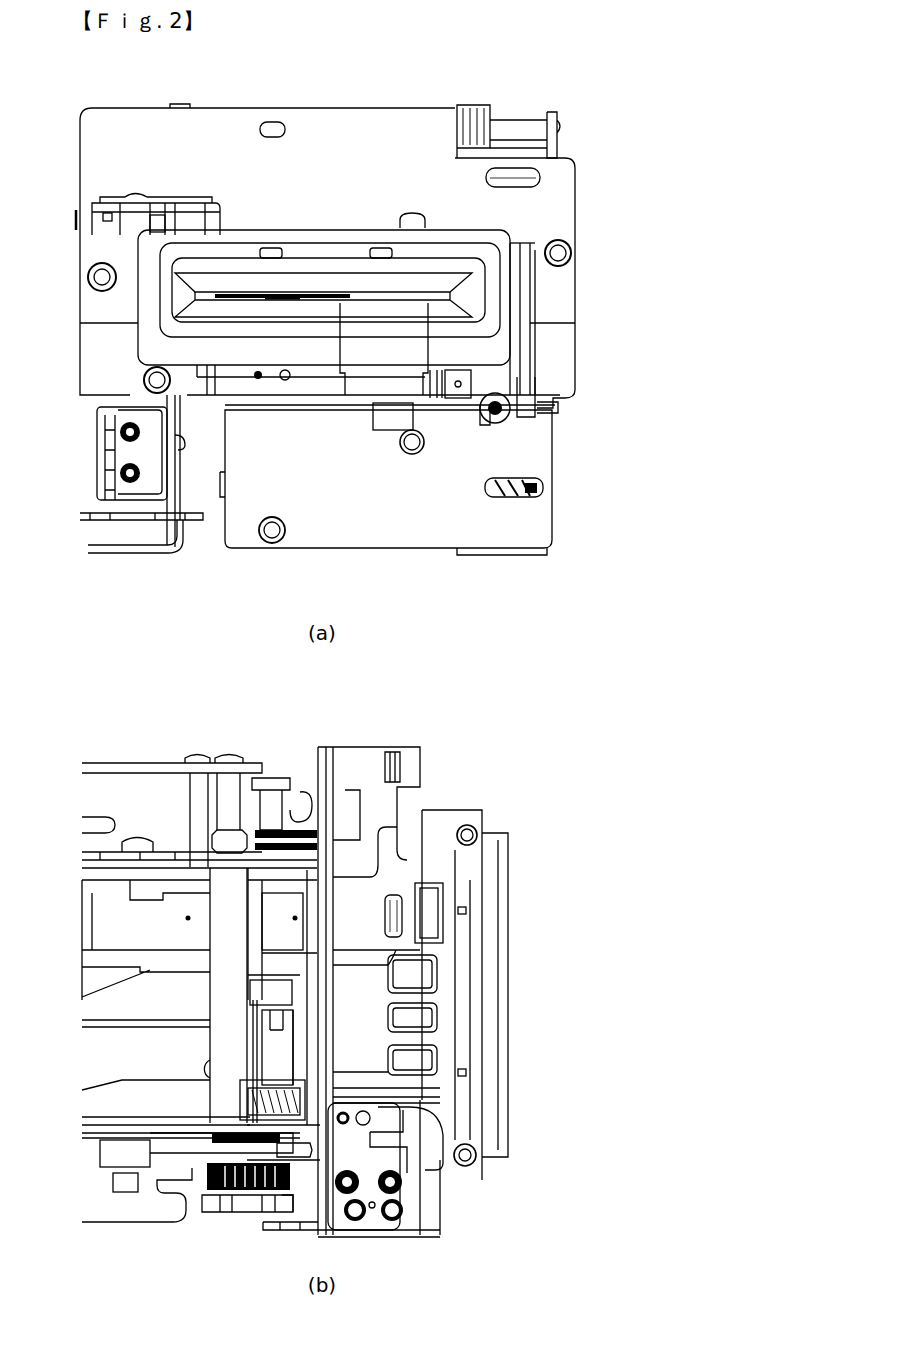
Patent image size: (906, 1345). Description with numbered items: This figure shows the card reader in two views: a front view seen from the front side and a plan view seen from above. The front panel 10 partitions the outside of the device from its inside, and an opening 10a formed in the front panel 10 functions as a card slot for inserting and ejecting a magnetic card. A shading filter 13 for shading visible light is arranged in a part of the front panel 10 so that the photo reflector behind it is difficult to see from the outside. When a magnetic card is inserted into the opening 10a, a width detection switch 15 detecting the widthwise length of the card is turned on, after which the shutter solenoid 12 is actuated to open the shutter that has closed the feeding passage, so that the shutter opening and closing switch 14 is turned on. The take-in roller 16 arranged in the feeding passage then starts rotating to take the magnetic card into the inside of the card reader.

The front panel 10 is at (233, 233).
The opening 10a is at (302, 292).
The shutter solenoid 12 is at (395, 517).
The shading filter 13 is at (360, 325).
The shutter opening and closing switch 14 is at (148, 487).
The width detection switch 15 is at (397, 1115).
The take-in roller 16 is at (267, 990).